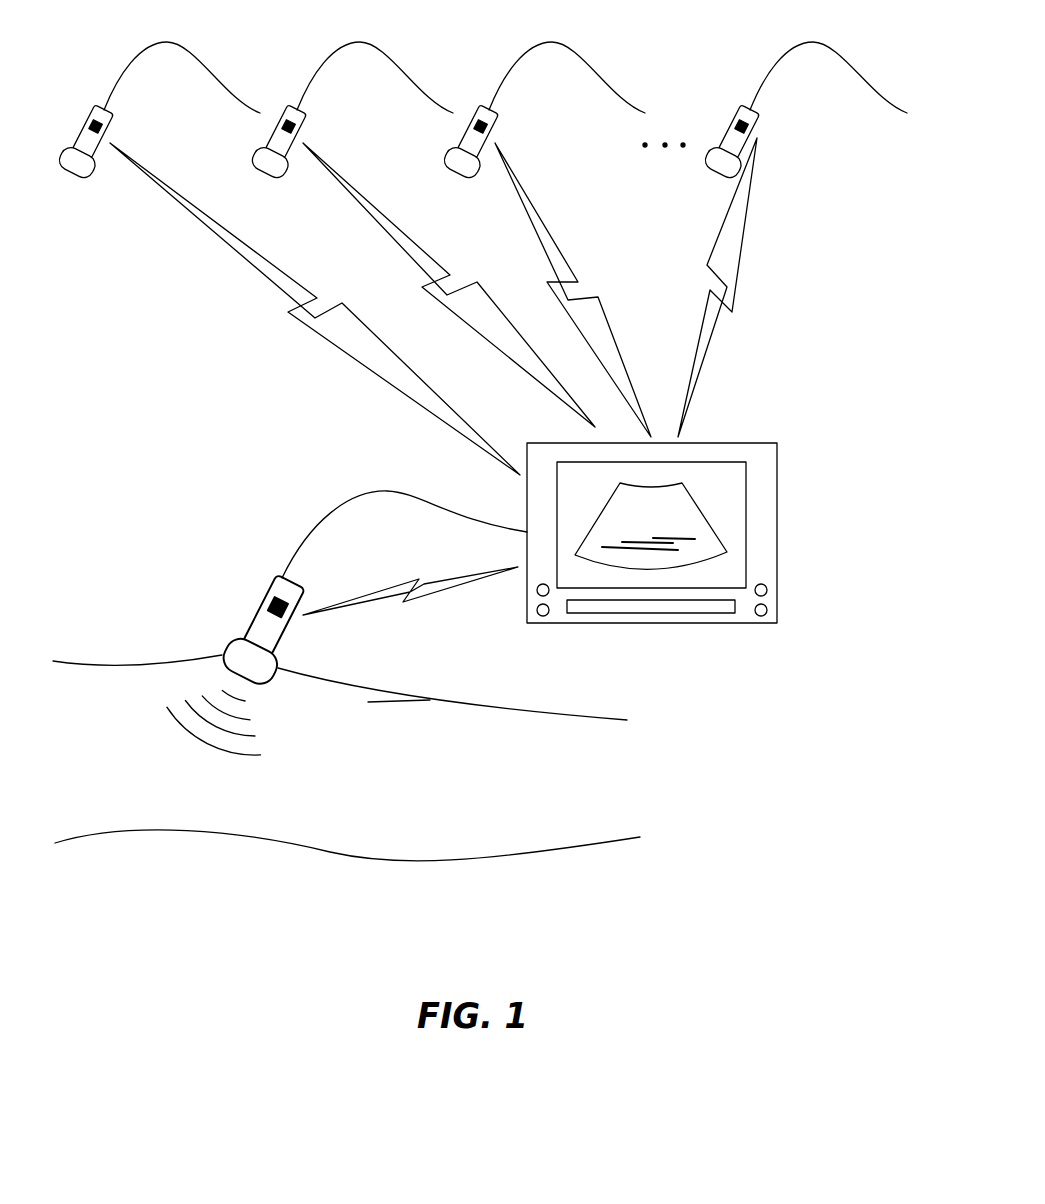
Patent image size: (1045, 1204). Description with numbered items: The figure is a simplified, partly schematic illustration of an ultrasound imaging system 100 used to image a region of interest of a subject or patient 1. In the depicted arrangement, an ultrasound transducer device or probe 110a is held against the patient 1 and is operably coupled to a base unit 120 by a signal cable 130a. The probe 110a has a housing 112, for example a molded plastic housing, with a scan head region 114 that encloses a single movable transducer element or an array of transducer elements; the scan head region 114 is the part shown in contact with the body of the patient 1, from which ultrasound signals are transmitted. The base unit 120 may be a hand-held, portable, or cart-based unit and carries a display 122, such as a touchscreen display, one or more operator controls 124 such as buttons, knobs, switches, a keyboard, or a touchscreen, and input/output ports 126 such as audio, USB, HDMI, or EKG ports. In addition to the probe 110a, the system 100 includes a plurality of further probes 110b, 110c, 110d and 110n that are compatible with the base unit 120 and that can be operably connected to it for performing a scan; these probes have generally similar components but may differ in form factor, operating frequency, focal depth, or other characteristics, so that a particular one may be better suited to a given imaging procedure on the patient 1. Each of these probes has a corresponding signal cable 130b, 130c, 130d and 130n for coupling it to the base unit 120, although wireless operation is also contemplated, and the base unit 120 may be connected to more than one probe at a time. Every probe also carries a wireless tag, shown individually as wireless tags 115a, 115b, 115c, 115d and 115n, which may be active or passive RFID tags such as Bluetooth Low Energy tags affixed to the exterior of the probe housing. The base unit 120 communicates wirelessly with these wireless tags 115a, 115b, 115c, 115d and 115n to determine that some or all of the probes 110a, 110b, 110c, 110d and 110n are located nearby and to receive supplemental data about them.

The patient 1 is at (478, 703).
The ultrasound imaging system 100 is at (146, 468).
The probe 110a is at (262, 563).
The probe 110b is at (90, 200).
The probe 110c is at (283, 200).
The probe 110d is at (475, 200).
The probe 110n is at (713, 201).
The housing 112 is at (247, 633).
The scan head region 114 is at (265, 680).
The wireless tag 115a is at (267, 595).
The wireless tag 115b is at (107, 127).
The wireless tag 115c is at (300, 127).
The wireless tag 115d is at (492, 127).
The wireless tag 115n is at (754, 127).
The base unit 120 is at (703, 529).
The display 122 is at (745, 524).
The operator controls 124 is at (655, 613).
The input/output ports 126 is at (768, 597).
The signal cable 130a is at (388, 493).
The signal cable 130b is at (167, 43).
The signal cable 130c is at (360, 43).
The signal cable 130d is at (552, 43).
The signal cable 130n is at (813, 43).